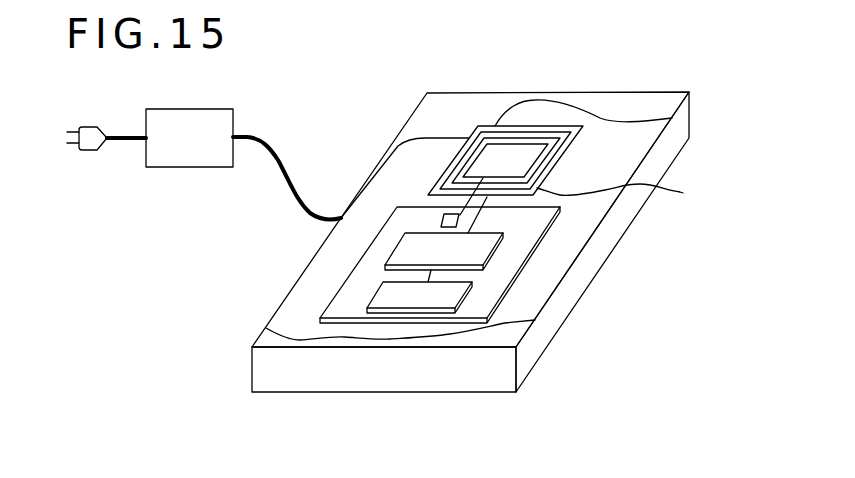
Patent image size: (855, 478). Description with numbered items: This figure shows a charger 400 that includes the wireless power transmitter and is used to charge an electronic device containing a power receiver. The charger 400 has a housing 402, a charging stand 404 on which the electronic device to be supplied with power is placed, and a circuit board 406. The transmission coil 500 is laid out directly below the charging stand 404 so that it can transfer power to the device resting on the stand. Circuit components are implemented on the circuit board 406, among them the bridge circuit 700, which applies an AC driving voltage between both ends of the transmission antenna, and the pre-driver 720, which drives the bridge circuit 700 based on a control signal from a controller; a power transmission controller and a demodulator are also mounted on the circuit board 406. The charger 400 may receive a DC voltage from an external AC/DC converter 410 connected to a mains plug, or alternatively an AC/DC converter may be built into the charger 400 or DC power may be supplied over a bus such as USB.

The charger 400 is at (433, 375).
The housing 402 is at (680, 123).
The charging stand 404 is at (485, 127).
The circuit board 406 is at (523, 238).
The AC/DC converter 410 is at (187, 169).
The transmission coil 500 is at (628, 194).
The bridge circuit 700 is at (488, 252).
The pre-driver 720 is at (462, 295).